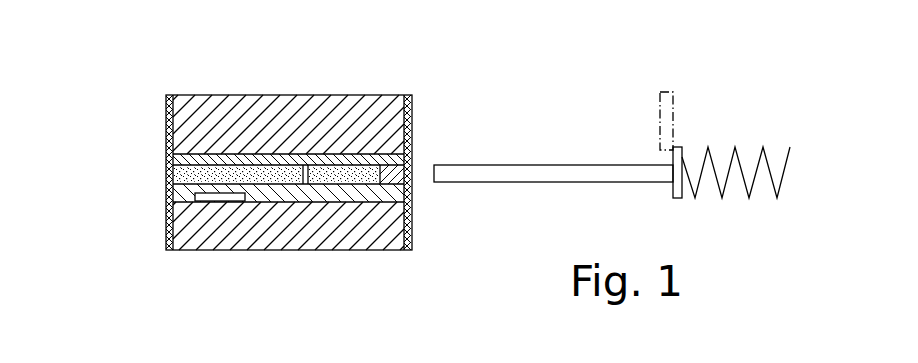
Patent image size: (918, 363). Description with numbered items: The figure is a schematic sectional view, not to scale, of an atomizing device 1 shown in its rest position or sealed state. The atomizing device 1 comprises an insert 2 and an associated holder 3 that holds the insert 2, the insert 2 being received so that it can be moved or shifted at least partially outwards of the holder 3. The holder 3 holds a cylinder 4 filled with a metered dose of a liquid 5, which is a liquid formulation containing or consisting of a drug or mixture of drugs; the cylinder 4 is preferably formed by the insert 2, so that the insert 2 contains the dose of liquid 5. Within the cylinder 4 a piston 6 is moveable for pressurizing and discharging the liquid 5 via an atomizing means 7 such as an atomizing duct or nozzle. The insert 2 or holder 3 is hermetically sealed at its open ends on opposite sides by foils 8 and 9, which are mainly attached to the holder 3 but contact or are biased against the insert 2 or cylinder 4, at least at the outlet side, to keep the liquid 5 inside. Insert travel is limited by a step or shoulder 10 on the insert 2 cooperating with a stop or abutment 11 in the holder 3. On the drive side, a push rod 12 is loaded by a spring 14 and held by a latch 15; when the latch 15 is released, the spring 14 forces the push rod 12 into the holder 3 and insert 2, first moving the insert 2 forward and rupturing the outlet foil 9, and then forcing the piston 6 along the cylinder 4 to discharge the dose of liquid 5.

The atomizing device 1 is at (86, 98).
The insert 2 is at (258, 158).
The holder 3 is at (318, 110).
The cylinder 4 is at (307, 184).
The liquid 5 is at (190, 194).
The piston 6 is at (386, 184).
The atomizing means 7 is at (167, 184).
The foil 8 is at (413, 105).
The foil 9 is at (166, 131).
The shoulder 10 is at (228, 204).
The abutment 11 is at (220, 202).
The push rod 12 is at (488, 167).
The spring 14 is at (712, 162).
The latch 15 is at (672, 92).